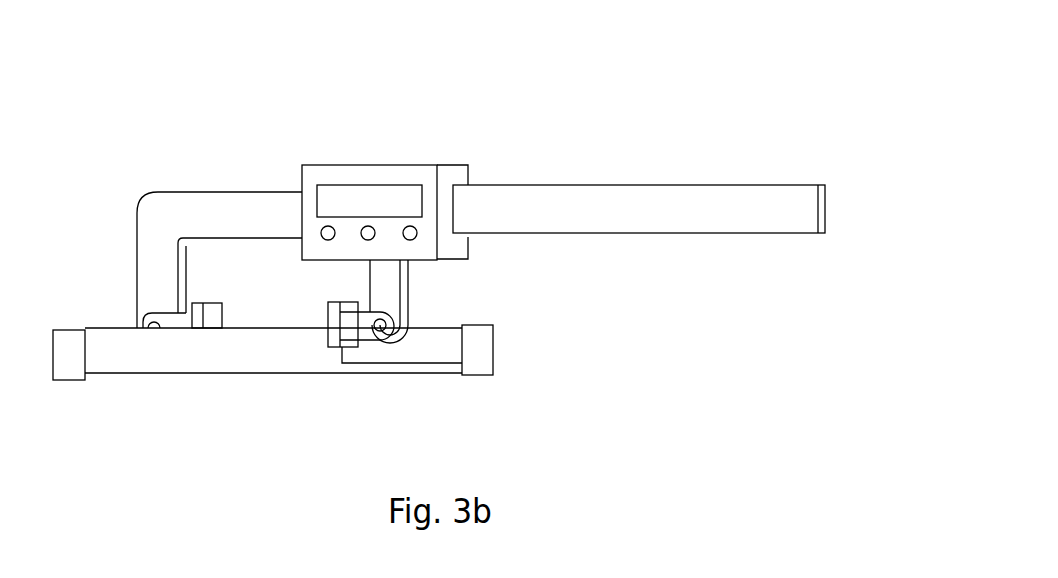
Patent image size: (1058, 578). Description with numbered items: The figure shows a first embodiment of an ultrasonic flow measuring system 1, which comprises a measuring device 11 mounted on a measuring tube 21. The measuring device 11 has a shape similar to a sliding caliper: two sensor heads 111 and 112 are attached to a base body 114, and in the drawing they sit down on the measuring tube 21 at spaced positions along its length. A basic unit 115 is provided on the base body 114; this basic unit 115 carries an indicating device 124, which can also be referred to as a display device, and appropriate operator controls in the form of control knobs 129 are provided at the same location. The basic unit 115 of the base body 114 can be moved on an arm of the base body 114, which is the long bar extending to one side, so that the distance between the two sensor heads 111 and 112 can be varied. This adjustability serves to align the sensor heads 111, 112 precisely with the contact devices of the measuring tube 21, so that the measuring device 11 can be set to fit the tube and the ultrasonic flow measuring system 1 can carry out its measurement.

The ultrasonic flow measuring system 1 is at (499, 77).
The measuring device 11 is at (190, 217).
The measuring tube 21 is at (110, 362).
The sensor head 111 is at (212, 322).
The sensor head 112 is at (333, 330).
The base body 114 is at (423, 177).
The basic unit 115 is at (453, 175).
The indicating device 124 is at (358, 200).
The control knobs 129 is at (325, 227).